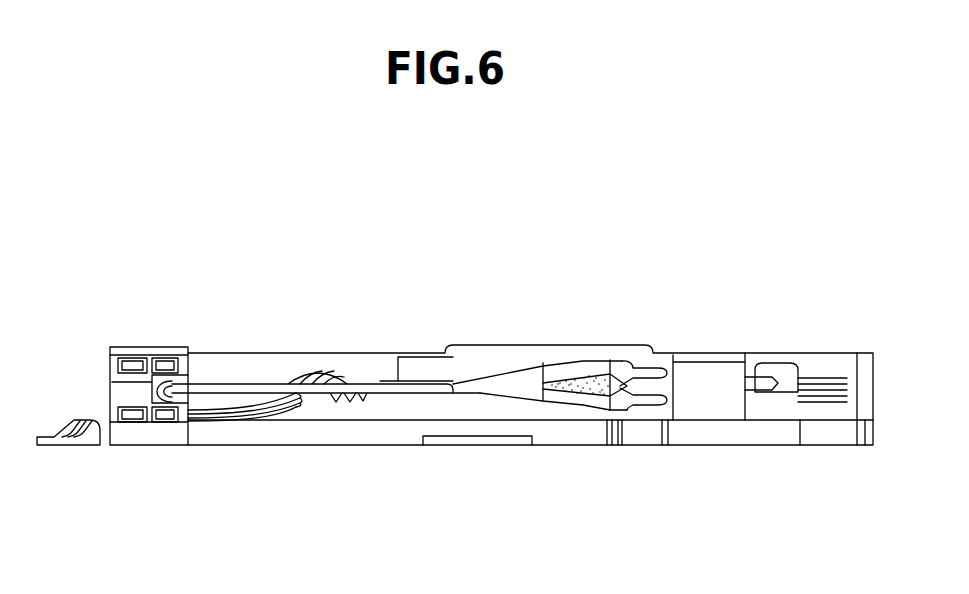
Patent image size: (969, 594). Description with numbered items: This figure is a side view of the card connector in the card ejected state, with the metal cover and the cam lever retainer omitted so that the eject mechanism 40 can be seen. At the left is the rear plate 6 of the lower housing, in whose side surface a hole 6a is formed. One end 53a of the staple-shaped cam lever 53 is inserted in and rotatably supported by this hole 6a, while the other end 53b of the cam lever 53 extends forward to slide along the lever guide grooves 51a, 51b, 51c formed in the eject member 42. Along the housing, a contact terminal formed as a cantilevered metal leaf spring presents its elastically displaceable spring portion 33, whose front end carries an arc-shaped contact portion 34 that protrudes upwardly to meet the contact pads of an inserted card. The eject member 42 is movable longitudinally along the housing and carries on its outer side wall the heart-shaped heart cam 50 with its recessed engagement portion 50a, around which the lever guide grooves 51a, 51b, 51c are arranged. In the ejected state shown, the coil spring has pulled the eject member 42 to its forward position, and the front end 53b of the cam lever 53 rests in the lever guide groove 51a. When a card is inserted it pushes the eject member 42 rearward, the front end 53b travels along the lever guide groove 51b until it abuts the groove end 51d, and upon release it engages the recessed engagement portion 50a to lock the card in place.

The rear plate 6 is at (128, 347).
The hole 6a is at (150, 380).
The spring portion 33 is at (271, 411).
The contact portion 34 is at (335, 374).
The eject mechanism 40 is at (483, 314).
The eject member 42 is at (640, 350).
The heart cam 50 is at (598, 406).
The recessed engagement portion 50a is at (660, 374).
The lever guide groove 51a is at (477, 391).
The lever guide groove 51b is at (557, 396).
The lever guide groove 51c is at (573, 375).
The groove end 51d is at (650, 408).
The cam lever 53 is at (259, 385).
The one end of cam lever 53a is at (172, 380).
The other end of cam lever 53b is at (445, 384).